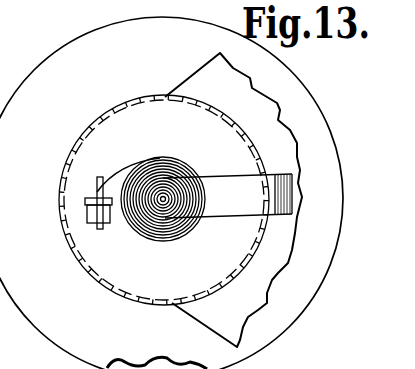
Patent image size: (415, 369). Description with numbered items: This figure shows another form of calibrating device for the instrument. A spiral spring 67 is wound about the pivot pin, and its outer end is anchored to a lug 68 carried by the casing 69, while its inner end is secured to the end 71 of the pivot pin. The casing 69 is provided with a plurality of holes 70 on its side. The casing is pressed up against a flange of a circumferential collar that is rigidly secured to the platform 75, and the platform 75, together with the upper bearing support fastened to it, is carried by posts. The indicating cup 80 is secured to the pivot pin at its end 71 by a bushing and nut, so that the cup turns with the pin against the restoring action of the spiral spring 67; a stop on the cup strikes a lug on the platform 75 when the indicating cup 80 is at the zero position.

The spiral spring 67 is at (127, 175).
The lug 68 is at (83, 203).
The casing 69 is at (115, 262).
The holes 70 is at (63, 217).
The end of the pivot pin 71 is at (163, 201).
The platform 75 is at (251, 182).
The indicating cup 80 is at (302, 110).